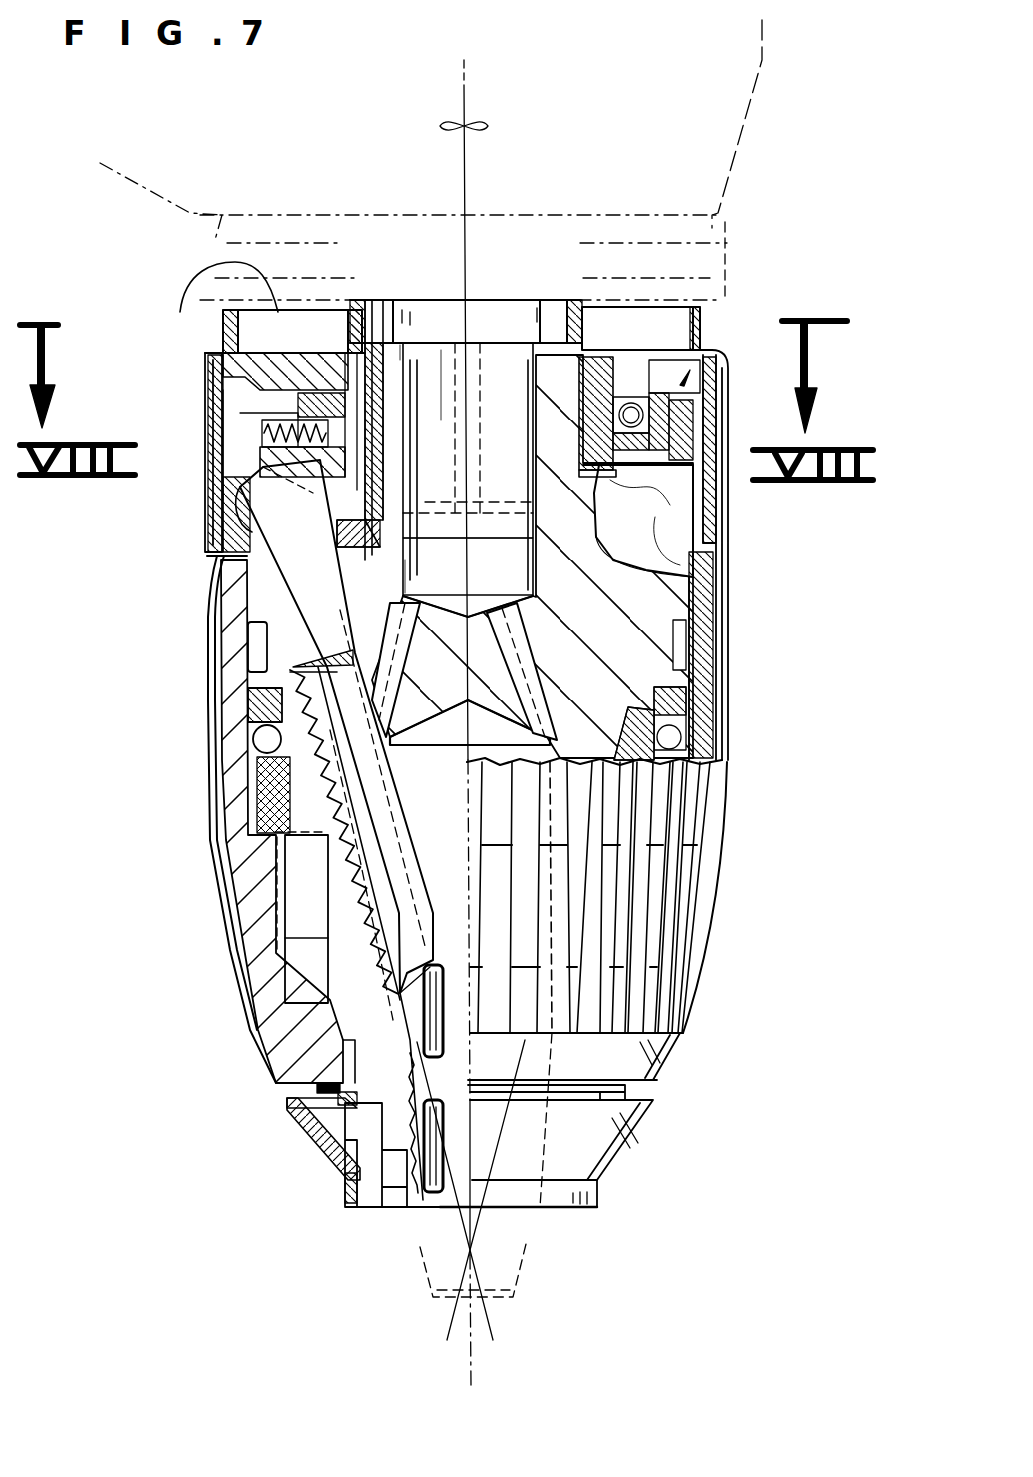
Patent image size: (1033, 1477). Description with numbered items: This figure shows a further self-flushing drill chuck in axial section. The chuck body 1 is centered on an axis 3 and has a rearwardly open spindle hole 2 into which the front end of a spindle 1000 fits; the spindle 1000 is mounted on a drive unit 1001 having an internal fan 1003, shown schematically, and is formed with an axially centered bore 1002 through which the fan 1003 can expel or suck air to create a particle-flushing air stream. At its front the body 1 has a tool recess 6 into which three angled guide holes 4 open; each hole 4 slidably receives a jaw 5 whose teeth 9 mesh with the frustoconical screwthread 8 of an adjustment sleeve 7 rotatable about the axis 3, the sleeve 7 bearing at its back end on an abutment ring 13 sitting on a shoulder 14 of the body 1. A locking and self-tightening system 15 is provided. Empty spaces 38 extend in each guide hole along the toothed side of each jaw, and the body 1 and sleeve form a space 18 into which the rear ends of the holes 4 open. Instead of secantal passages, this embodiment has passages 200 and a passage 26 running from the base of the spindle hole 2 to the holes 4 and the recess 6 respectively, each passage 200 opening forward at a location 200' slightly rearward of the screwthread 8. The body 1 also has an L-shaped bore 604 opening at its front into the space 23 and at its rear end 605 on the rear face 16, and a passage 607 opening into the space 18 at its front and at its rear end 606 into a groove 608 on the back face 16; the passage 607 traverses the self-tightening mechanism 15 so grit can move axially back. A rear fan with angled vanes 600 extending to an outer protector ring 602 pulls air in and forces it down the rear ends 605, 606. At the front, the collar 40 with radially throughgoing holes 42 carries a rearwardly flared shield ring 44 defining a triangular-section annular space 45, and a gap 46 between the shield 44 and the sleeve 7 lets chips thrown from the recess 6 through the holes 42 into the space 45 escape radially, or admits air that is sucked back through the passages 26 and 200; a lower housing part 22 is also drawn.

The chuck body 1 is at (640, 602).
The spindle hole 2 is at (513, 560).
The axis 3 is at (464, 100).
The guide passages 4 is at (300, 935).
The jaw 5 is at (330, 900).
The tool recess 6 is at (455, 855).
The adjustment sleeve 7 is at (240, 821).
The frustoconical screwthread 8 is at (292, 787).
The teeth 9 is at (330, 860).
The abutment ring 13 is at (252, 725).
The shoulder 14 is at (305, 675).
The locking and self-tightening system 15 is at (688, 352).
The rear end face 16 is at (400, 345).
The space 18 is at (700, 530).
The lower housing 22 is at (333, 990).
The space 23 is at (373, 775).
The passage 26 is at (518, 633).
The empty spaces 38 is at (253, 515).
The collar 40 is at (370, 1200).
The radially throughgoing holes 42 is at (353, 1173).
The shield ring 44 is at (370, 1167).
The annular space 45 is at (323, 1108).
The gap 46 is at (290, 1090).
The passages 200 is at (181, 601).
The forward opening location 200' is at (190, 640).
The fan vanes 600 is at (278, 318).
The outer protector ring 602 is at (233, 307).
The L-shaped bore 604 is at (441, 350).
The rear end of L-shaped bore 605 is at (352, 340).
The rear end of passage 606 is at (640, 335).
The passage 607 is at (655, 517).
The groove 608 is at (310, 340).
The spindle 1000 is at (490, 350).
The drive unit 1001 is at (431, 160).
The axially centered bore 1002 is at (393, 490).
The fan 1003 is at (480, 126).